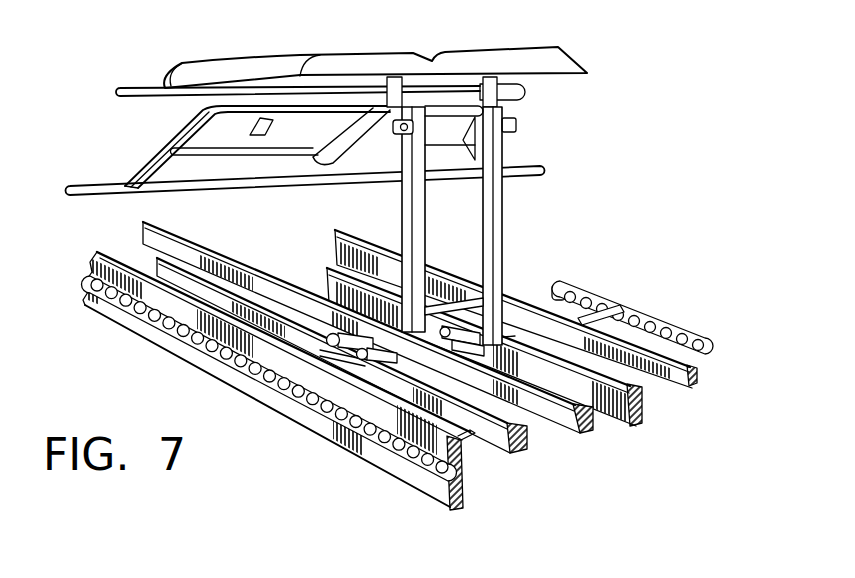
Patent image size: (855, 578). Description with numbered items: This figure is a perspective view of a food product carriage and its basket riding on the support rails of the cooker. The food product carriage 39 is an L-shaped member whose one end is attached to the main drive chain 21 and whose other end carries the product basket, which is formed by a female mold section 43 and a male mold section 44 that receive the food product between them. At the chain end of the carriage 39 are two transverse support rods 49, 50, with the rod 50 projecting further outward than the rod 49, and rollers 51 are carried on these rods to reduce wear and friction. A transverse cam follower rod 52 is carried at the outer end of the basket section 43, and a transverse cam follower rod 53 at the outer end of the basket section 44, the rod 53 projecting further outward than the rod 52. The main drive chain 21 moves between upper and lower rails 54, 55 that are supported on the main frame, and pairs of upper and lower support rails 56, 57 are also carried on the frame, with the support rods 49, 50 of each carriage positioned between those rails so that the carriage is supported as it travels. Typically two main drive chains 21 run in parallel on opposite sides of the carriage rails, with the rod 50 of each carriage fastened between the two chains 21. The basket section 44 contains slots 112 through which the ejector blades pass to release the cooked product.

The main drive chain 21 is at (597, 294).
The food product carriage 39 is at (502, 200).
The female mold section 43 is at (560, 46).
The male mold section 44 is at (167, 143).
The transverse support rod 49 is at (482, 328).
The transverse support rod 50 is at (625, 310).
The roller 51 is at (332, 330).
The transverse cam follower rod 52 is at (127, 88).
The transverse cam follower rod 53 is at (77, 198).
The upper rail 54 is at (466, 448).
The lower rail 55 is at (413, 484).
The upper support rail 56 is at (203, 250).
The lower support rail 57 is at (157, 268).
The slot 112 is at (267, 118).